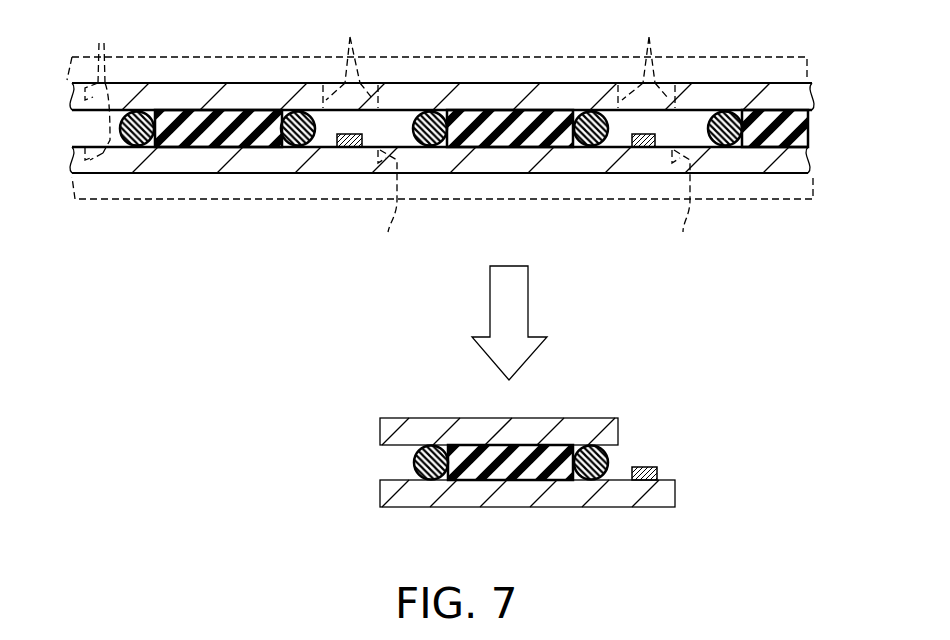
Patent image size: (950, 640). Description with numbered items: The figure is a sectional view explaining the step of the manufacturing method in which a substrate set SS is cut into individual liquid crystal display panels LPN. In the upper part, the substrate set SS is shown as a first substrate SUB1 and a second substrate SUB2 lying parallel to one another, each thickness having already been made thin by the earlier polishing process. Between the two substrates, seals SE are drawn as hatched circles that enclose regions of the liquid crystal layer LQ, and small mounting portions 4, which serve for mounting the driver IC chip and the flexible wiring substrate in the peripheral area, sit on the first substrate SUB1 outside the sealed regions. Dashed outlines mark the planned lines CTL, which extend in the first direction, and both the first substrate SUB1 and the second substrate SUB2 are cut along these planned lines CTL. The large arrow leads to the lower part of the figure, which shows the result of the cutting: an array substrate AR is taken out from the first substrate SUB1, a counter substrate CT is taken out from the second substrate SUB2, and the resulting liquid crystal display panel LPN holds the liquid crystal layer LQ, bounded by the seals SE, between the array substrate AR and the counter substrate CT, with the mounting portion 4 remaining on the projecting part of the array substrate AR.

The planned line CTL is at (70, 173).
The second substrate SUB2 is at (818, 97).
The first substrate SUB1 is at (817, 164).
The substrate set SS is at (446, 283).
The seal SE is at (135, 138).
The liquid crystal layer LQ is at (213, 137).
The mounting portion 4 is at (344, 147).
The counter substrate CT is at (375, 432).
The array substrate AR is at (377, 494).
The liquid crystal display panel LPN is at (521, 450).